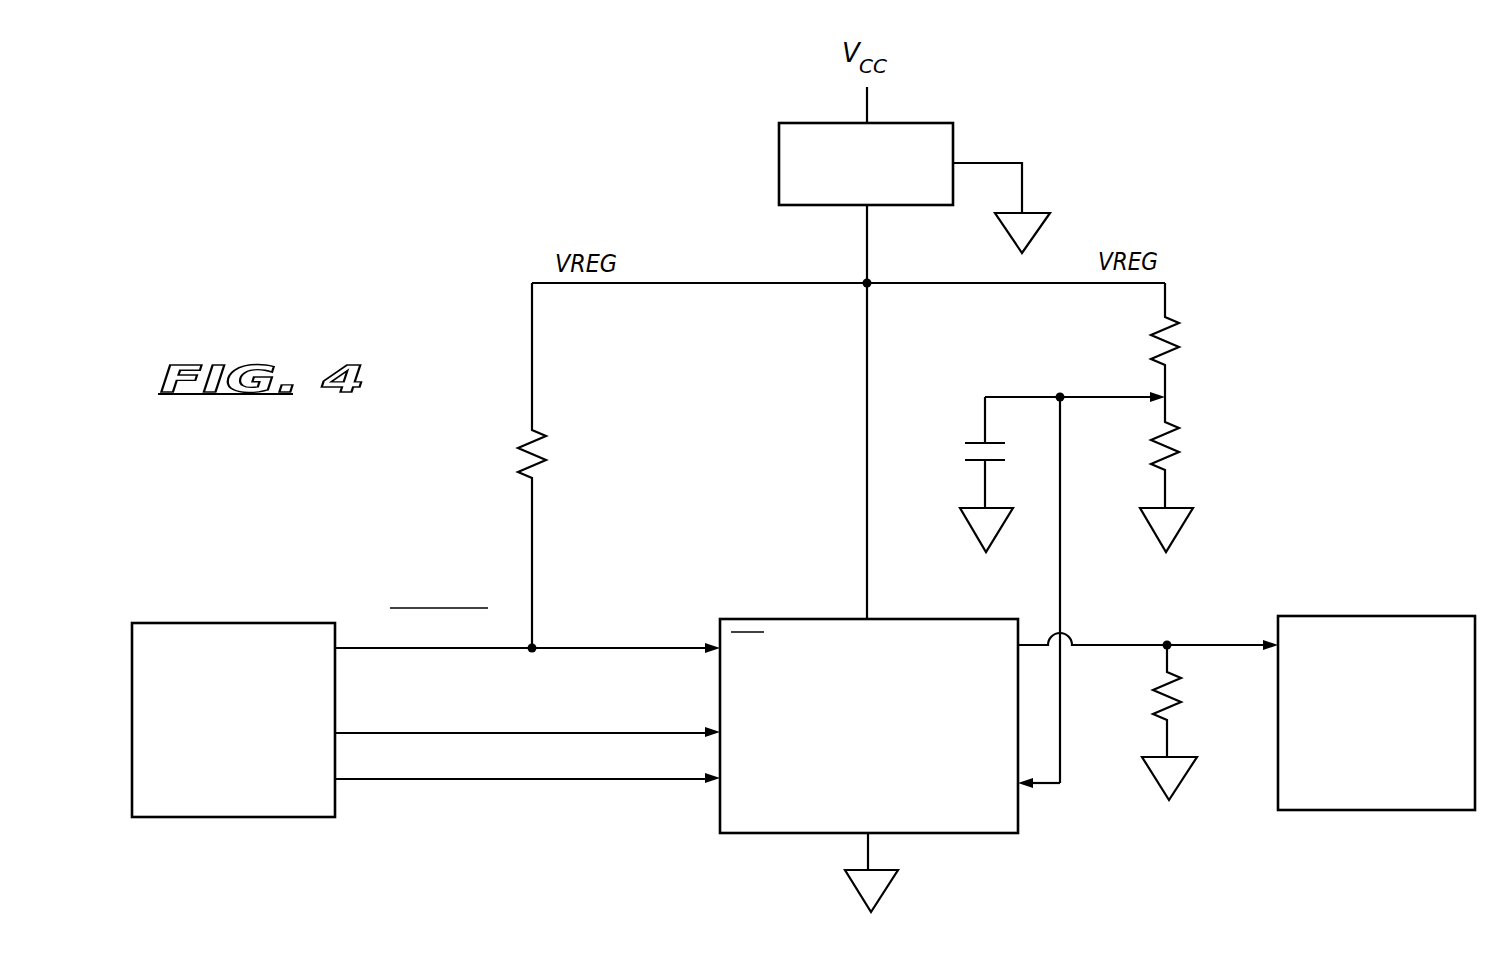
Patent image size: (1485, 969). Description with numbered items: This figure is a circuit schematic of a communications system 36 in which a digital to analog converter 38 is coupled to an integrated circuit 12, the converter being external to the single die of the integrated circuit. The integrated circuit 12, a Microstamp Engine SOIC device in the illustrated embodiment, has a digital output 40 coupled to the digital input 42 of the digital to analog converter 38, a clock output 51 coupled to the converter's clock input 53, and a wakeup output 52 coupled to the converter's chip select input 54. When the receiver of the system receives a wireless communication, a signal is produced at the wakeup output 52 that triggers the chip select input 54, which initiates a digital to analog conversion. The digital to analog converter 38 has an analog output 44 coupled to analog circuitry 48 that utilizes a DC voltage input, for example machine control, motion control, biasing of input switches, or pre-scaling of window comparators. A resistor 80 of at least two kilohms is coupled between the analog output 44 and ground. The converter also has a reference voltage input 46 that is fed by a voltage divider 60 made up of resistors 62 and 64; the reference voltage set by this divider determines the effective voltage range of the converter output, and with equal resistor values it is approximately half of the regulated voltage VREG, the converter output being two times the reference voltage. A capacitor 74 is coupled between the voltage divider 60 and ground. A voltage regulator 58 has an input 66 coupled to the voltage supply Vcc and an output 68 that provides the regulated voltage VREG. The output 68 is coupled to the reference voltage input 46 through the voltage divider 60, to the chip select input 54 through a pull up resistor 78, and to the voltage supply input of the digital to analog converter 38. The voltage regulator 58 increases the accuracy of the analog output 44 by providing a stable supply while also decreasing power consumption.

The integrated circuit 12 is at (215, 622).
The communications system 36 is at (1276, 230).
The digital to analog converter 38 is at (957, 746).
The digital output 40 is at (336, 782).
The digital input 42 is at (718, 774).
The analog output 44 is at (1018, 640).
The reference voltage input 46 is at (1020, 784).
The analog circuitry 48 is at (1360, 614).
The clock output 51 is at (336, 733).
The wakeup output 52 is at (340, 645).
The clock input 53 is at (718, 730).
The chip select input 54 is at (718, 645).
The voltage regulator 58 is at (779, 165).
The voltage divider 60 is at (1199, 417).
The resistor 62 is at (1160, 337).
The resistor 64 is at (1180, 455).
The input 66 is at (868, 122).
The output 68 is at (866, 210).
The capacitor 74 is at (985, 465).
The pull up resistor 78 is at (528, 452).
The resistor 80 is at (1160, 722).